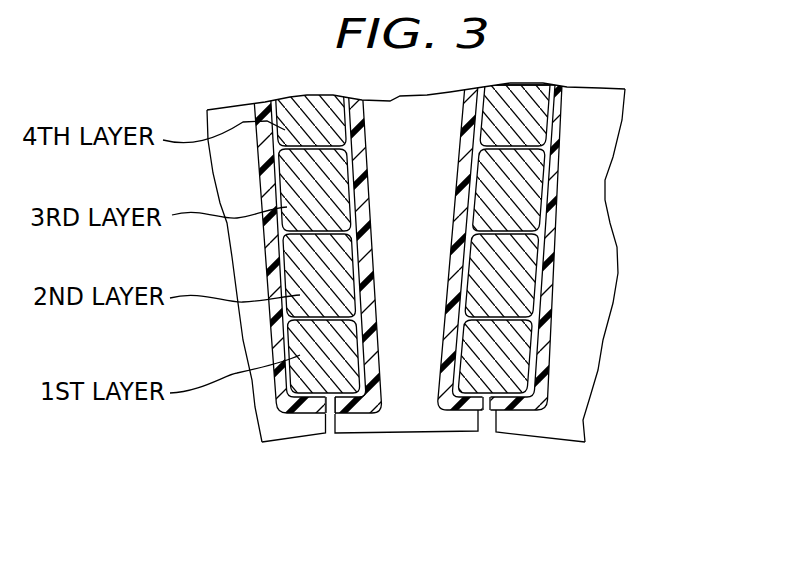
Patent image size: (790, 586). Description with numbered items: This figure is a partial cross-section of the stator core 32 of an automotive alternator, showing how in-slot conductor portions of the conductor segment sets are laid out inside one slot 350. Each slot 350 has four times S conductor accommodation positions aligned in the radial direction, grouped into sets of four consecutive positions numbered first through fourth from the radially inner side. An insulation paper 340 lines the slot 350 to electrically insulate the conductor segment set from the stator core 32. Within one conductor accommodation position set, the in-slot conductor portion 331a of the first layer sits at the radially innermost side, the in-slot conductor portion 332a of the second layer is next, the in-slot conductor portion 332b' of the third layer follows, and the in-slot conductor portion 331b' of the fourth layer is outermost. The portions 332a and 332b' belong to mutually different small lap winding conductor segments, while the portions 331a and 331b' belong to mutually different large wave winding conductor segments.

The stator core 32 is at (410, 378).
The slot 350 is at (483, 407).
The insulation paper 340 is at (550, 225).
The in-slot conductor portion of the first layer 331a is at (510, 347).
The in-slot conductor portion of the second layer 332a is at (530, 275).
The in-slot conductor portion of the third layer 332b' is at (602, 190).
The in-slot conductor portion of the fourth layer 331b' is at (609, 115).